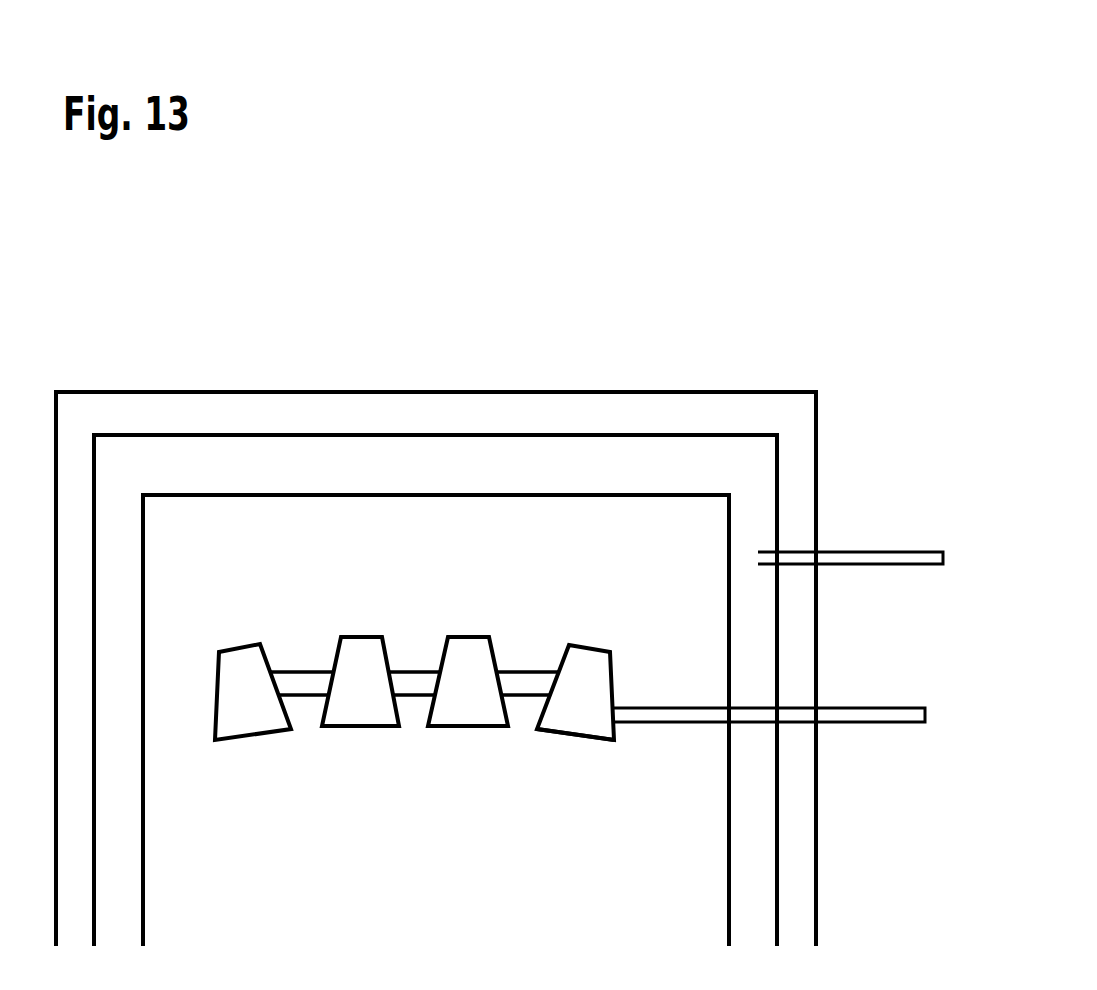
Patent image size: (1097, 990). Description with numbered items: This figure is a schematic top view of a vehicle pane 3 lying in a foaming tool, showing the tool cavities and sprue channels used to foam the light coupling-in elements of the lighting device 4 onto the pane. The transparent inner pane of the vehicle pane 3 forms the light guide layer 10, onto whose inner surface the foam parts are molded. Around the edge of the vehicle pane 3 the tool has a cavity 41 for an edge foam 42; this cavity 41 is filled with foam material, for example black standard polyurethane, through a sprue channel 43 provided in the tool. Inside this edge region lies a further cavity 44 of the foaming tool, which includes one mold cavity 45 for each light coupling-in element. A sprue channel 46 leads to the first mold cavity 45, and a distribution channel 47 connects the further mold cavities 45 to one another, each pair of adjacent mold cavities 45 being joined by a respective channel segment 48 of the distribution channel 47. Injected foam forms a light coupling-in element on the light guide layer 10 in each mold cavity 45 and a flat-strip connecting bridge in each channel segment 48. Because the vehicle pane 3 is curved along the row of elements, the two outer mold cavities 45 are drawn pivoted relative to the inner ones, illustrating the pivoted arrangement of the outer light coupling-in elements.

The vehicle pane 3 is at (112, 384).
The cavity 41 is at (781, 467).
The edge foam 42 is at (691, 463).
The sprue channel 43 is at (890, 560).
The sprue channel 46 is at (889, 715).
The distribution channel 47 is at (520, 657).
The channel segment 48 is at (306, 687).
The mold cavity 45 is at (234, 646).
The lighting device 4 is at (468, 631).
The further cavity 44 is at (583, 742).
The light guide layer 10 is at (405, 941).